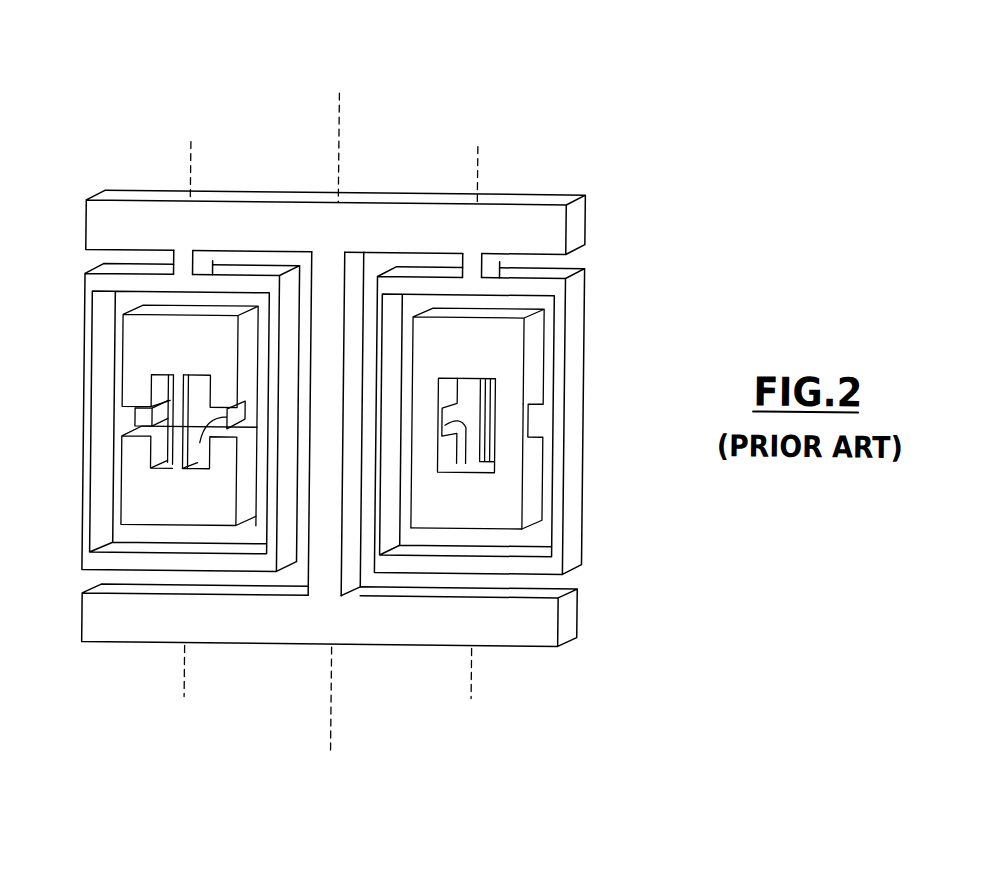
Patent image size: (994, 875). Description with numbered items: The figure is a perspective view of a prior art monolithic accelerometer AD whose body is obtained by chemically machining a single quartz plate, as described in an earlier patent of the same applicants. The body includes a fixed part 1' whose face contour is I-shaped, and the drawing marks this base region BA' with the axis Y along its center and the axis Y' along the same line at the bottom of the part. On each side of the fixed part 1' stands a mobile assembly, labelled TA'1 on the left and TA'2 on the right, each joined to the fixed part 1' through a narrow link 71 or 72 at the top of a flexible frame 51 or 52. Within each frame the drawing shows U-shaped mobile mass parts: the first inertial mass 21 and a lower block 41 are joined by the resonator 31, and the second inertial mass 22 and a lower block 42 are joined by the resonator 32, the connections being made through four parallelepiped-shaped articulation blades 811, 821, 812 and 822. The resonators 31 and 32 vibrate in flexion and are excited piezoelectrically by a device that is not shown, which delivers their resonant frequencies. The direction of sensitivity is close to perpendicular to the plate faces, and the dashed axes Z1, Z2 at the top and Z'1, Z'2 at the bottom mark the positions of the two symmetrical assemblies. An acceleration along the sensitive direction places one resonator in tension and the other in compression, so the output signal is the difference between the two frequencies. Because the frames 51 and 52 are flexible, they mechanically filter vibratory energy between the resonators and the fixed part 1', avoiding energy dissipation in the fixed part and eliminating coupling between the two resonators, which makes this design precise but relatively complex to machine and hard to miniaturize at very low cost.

The accelerometer AD is at (130, 112).
The base BA' is at (334, 357).
The fixed part 1' is at (334, 386).
The first tuning fork assembly TA'1 is at (157, 360).
The second tuning fork assembly TA'2 is at (513, 368).
The connecting portion 71 is at (202, 262).
The connecting portion 72 is at (490, 262).
The flexible frame 51 is at (76, 491).
The flexible frame 52 is at (587, 499).
The inertial mass 21 is at (128, 357).
The inertial mass 22 is at (513, 348).
The lower mass 41 is at (137, 507).
The lower mass 42 is at (533, 508).
The resonator 31 is at (190, 405).
The resonator 32 is at (480, 405).
The articulation blade 811 is at (150, 421).
The articulation blade 812 is at (528, 428).
The articulation blade 821 is at (210, 418).
The articulation blade 822 is at (450, 418).
The Y axis Y is at (328, 145).
The Y' axis Y' is at (318, 700).
The Z1 axis Z1 is at (177, 167).
The Z2 axis Z2 is at (464, 171).
The Z'1 axis Z'1 is at (168, 685).
The Z'2 axis Z'2 is at (455, 693).